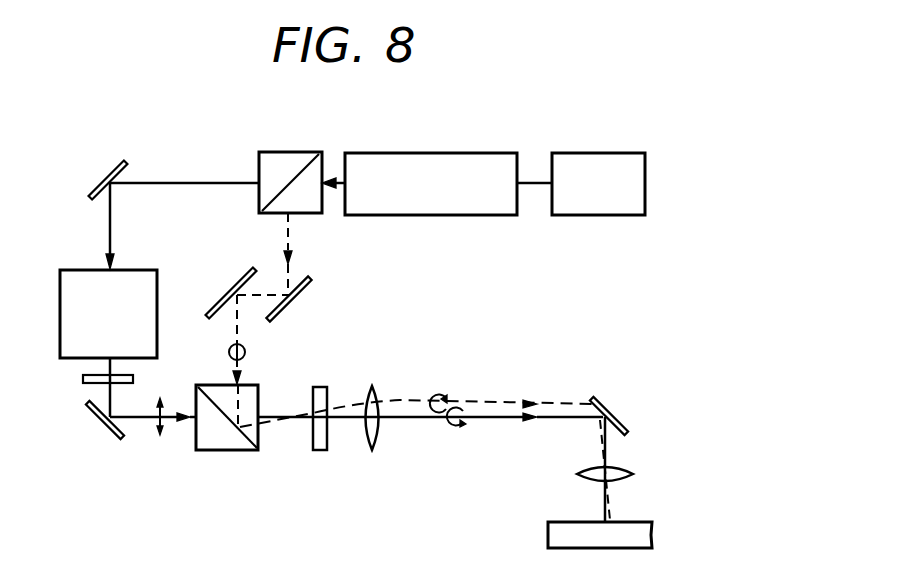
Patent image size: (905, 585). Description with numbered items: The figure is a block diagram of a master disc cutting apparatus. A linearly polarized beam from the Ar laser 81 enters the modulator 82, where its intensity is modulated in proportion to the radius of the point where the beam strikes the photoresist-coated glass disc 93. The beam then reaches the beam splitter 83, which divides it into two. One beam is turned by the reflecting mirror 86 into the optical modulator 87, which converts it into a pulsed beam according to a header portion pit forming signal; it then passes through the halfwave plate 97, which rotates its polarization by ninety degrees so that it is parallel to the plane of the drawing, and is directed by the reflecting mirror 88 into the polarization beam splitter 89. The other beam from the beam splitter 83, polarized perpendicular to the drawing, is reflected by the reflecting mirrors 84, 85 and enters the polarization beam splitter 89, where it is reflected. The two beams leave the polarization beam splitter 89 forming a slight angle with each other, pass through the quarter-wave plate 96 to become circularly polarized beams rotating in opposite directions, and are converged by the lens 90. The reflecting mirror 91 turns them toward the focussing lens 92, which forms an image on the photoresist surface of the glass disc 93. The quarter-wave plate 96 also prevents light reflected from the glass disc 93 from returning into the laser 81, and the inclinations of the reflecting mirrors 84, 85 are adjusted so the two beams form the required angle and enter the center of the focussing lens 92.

The Ar laser 81 is at (625, 152).
The modulator 82 is at (502, 152).
The beam splitter 83 is at (304, 152).
The reflecting mirror 84 is at (310, 288).
The reflecting mirror 85 is at (225, 295).
The reflecting mirror 86 is at (107, 177).
The optical modulator 87 is at (60, 317).
The reflecting mirror 88 is at (98, 420).
The polarization beam splitter 89 is at (227, 452).
The lens 90 is at (374, 387).
The reflecting mirror 91 is at (617, 408).
The focussing lens 92 is at (633, 470).
The glass disc 93 is at (575, 522).
The quarter-wave plate 96 is at (323, 387).
The halfwave plate 97 is at (83, 379).